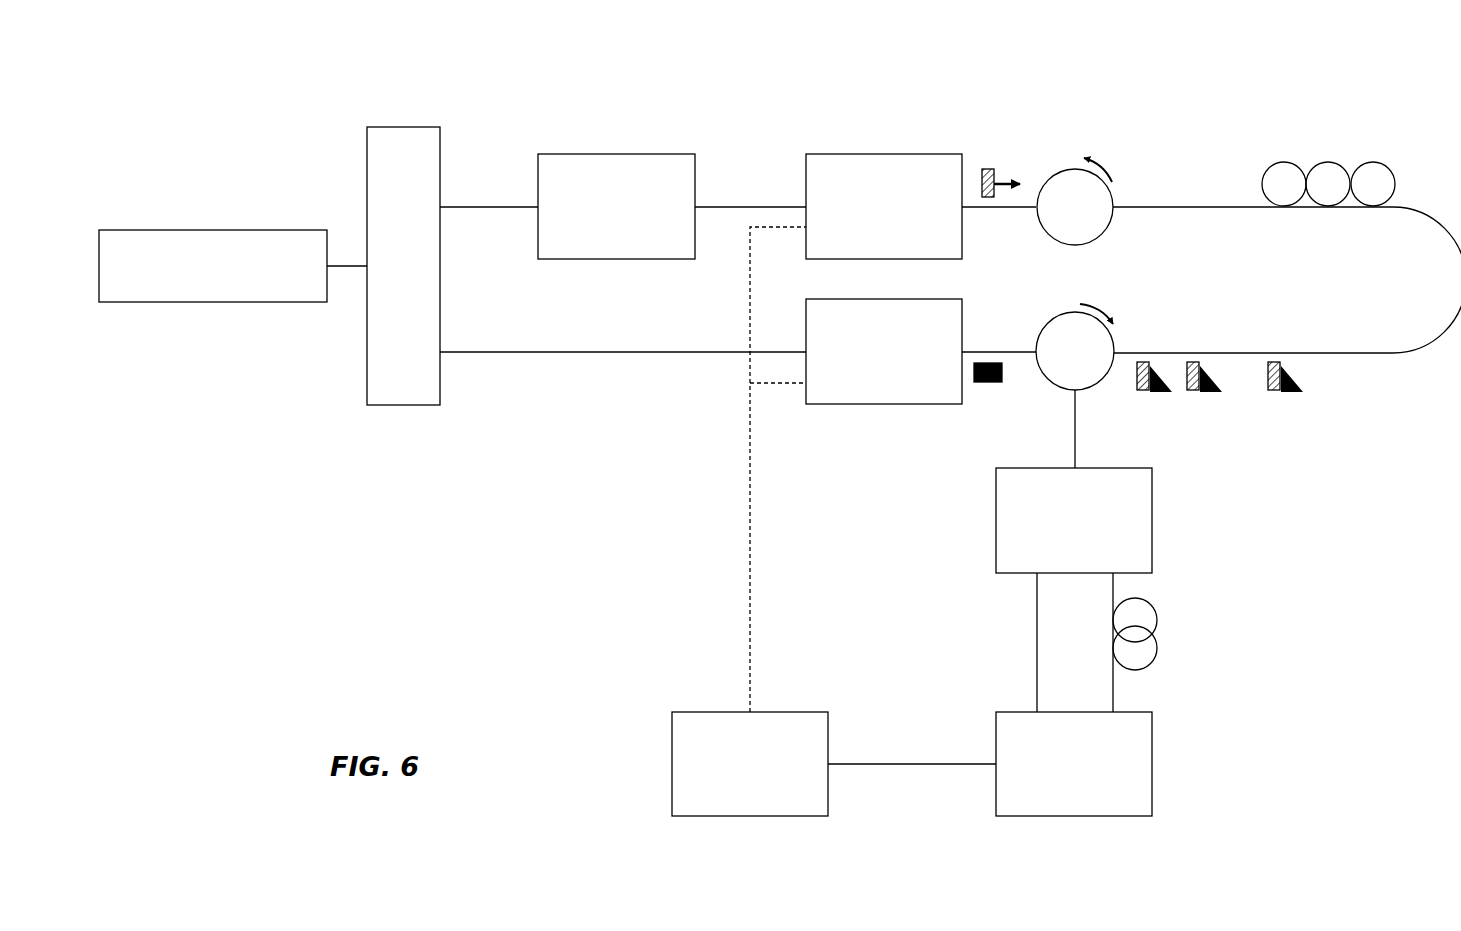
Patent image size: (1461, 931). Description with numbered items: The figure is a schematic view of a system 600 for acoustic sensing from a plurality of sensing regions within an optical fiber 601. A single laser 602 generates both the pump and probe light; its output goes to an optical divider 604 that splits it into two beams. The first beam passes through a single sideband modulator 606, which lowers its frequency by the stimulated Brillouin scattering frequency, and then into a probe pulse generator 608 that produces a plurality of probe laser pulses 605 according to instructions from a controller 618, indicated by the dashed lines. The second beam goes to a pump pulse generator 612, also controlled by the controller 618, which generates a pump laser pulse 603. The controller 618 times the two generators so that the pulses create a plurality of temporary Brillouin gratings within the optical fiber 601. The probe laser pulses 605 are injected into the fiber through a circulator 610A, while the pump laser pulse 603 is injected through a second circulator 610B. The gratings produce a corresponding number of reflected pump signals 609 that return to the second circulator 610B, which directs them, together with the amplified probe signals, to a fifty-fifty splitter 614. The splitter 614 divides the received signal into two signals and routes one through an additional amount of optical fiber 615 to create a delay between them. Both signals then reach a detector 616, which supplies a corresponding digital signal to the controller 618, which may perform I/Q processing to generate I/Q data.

The system 600 is at (215, 117).
The optical fiber 601 is at (1228, 203).
The laser 602 is at (233, 266).
The pump laser pulse 603 is at (988, 386).
The optical divider 604 is at (586, 266).
The probe laser pulses 605 is at (990, 164).
The single sideband modulator 606 is at (672, 206).
The probe pulse generator 608 is at (1282, 432).
The reflected pump signals 609 is at (1313, 340).
The circulator 610A is at (1075, 201).
The second circulator 610B is at (1075, 386).
The pump pulse generator 612 is at (921, 351).
The 50/50 splitter 614 is at (1074, 590).
The additional amount of optical fiber 615 is at (1166, 640).
The detector 616 is at (1074, 764).
The controller 618 is at (834, 521).